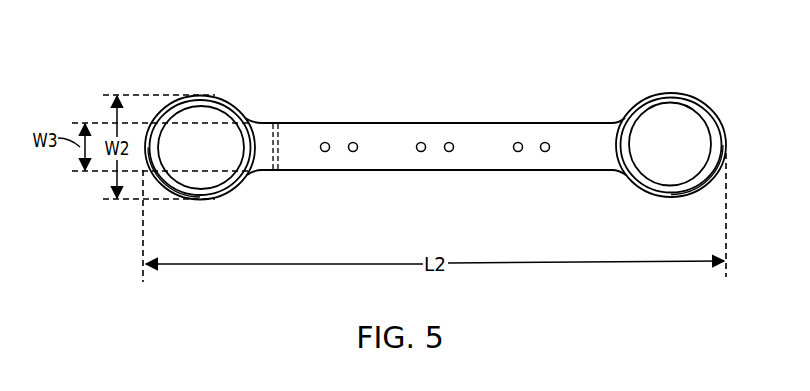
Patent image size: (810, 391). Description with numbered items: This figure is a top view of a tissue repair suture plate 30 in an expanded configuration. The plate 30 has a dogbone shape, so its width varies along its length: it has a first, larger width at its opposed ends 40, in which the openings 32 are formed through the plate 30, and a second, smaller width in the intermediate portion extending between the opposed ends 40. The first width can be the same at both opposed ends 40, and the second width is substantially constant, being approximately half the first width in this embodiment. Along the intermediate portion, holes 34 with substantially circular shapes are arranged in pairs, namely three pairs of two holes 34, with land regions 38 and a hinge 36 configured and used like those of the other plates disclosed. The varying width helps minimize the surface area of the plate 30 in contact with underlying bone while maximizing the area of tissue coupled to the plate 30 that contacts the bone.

The plate 30 is at (619, 75).
The openings 32 is at (189, 118).
The holes 34 is at (327, 152).
The hinge 36 is at (278, 123).
The land regions 38 is at (339, 140).
The opposed ends 40 is at (203, 203).